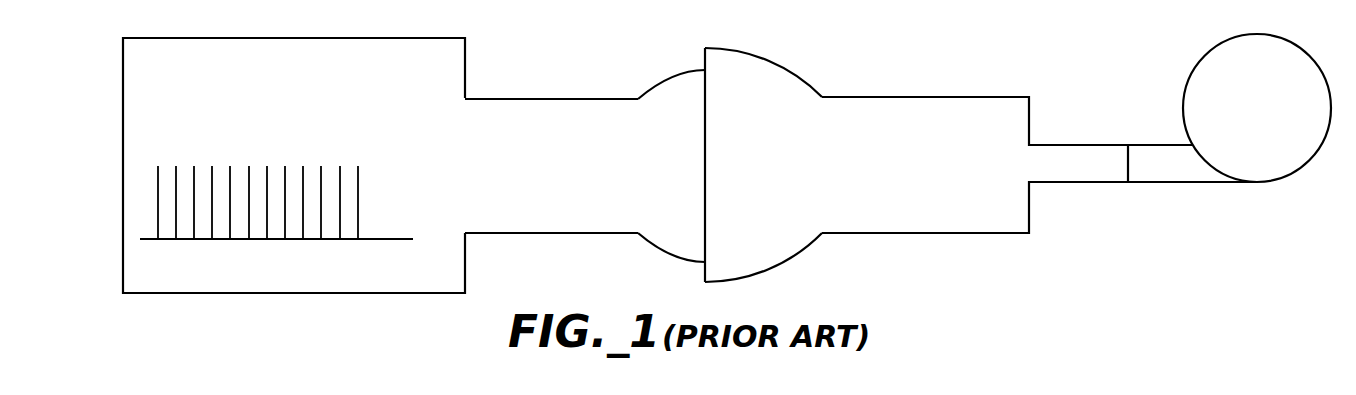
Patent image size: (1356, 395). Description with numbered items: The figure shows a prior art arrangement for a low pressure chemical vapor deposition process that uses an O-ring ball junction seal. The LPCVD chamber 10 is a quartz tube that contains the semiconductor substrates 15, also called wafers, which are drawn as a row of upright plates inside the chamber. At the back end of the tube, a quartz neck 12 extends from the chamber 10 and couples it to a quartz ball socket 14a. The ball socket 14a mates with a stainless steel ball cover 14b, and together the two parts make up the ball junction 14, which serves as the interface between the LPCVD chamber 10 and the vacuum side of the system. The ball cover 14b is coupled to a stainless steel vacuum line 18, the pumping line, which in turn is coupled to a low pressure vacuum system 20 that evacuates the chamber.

The LPCVD chamber 10 is at (298, 285).
The quartz neck 12 is at (557, 105).
The ball junction 14 is at (722, 147).
The quartz ball socket 14a is at (664, 242).
The stainless steel ball cover 14b is at (785, 72).
The semiconductor substrates 15 is at (268, 158).
The stainless steel vacuum line 18 is at (942, 236).
The low pressure vacuum system 20 is at (1240, 175).